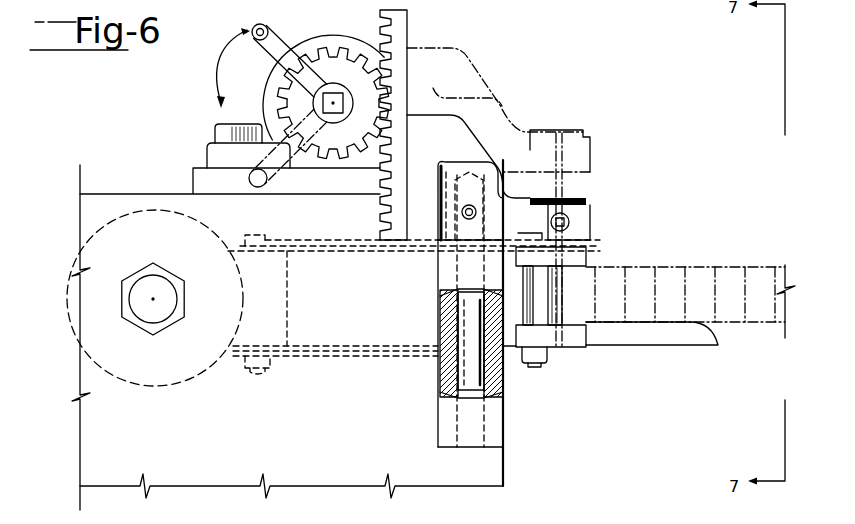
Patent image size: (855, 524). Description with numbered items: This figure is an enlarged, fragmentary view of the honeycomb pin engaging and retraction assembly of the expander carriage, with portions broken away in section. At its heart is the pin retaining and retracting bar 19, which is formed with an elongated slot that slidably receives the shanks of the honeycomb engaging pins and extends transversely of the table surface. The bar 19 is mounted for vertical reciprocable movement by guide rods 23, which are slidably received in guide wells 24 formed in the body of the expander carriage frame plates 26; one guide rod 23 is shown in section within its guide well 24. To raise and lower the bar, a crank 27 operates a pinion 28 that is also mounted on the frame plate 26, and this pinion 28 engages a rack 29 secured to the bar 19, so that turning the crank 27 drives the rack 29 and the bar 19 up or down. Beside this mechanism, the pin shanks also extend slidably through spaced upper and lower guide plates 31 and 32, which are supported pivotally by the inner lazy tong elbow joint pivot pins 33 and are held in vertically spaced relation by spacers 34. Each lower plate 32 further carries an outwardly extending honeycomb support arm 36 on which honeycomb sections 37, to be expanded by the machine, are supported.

The bar 19 is at (592, 160).
The guide rods 23 is at (484, 380).
The guide wells 24 is at (480, 432).
The expander carriage frame plates 26 is at (477, 472).
The crank 27 is at (280, 38).
The pinion 28 is at (330, 48).
The rack 29 is at (404, 62).
The upper guide plate 31 is at (588, 255).
The lower guide plate 32 is at (570, 347).
The elbow joint pivot pins 33 is at (535, 362).
The spacers 34 is at (537, 293).
The honeycomb support arm 36 is at (663, 340).
The honeycomb sections 37 is at (681, 265).